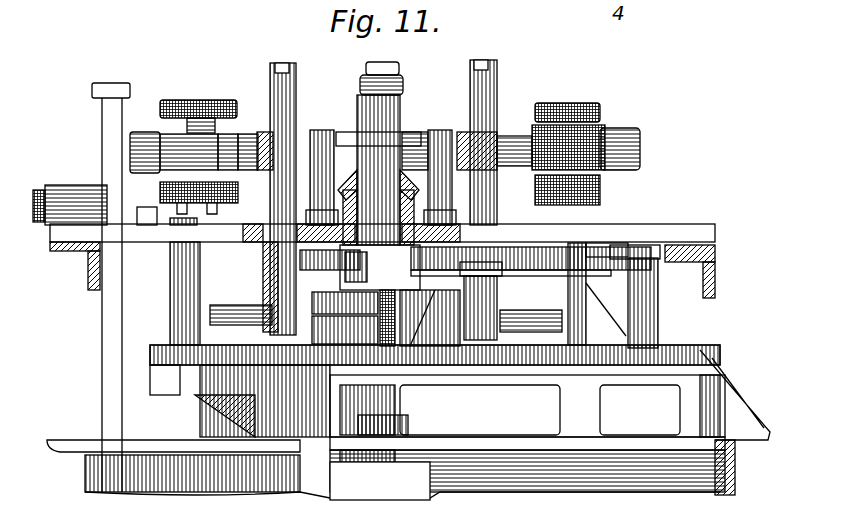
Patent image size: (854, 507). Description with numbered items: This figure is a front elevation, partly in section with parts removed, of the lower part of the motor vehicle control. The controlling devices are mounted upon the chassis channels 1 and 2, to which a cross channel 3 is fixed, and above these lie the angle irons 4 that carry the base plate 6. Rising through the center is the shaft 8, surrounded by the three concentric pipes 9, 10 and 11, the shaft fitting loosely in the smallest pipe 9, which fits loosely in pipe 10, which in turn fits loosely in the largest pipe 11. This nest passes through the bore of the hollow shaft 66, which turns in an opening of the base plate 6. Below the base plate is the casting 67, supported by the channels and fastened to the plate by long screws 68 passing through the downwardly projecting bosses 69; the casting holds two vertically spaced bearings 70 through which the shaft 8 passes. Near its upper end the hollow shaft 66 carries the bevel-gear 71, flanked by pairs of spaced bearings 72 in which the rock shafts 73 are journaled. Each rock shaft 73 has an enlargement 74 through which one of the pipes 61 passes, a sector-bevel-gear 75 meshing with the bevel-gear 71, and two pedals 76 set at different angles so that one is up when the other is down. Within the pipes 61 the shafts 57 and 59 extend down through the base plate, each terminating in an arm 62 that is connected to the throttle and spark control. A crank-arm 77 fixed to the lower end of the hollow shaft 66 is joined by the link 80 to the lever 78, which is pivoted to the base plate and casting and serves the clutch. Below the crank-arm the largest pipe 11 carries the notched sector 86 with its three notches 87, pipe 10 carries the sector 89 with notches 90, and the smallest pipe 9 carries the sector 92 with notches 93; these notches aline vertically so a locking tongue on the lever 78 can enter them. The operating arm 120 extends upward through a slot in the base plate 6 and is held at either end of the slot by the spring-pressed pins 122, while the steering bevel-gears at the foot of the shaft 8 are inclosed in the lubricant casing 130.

The channel 1 is at (735, 484).
The channel 2 is at (386, 469).
The cross channel 3 is at (625, 489).
The angle iron 4 is at (716, 280).
The base plate 6 is at (682, 236).
The shaft 8 is at (392, 66).
The smallest pipe 9 is at (366, 72).
The pipe 10 is at (388, 90).
The largest pipe 11 is at (378, 170).
The shaft 57 is at (492, 64).
The shaft 59 is at (264, 258).
The pipe 61 is at (272, 80).
The arm 62 is at (254, 306).
The hollow shaft 66 is at (378, 217).
The casting 67 is at (245, 392).
The screw 68 is at (182, 285).
The boss 69 is at (570, 336).
The bearing 70 is at (392, 432).
The bevel-gear 71 is at (378, 185).
The bearing 72 is at (150, 152).
The rock shaft 73 is at (250, 146).
The enlargement 74 is at (306, 142).
The sector-bevel-gear 75 is at (358, 142).
The pedal 76 is at (192, 108).
The crank-arm 77 is at (475, 263).
The lever 78 is at (528, 262).
The link 80 is at (380, 255).
The sector 86 is at (345, 299).
The notch 87 is at (420, 318).
The sector 89 is at (345, 327).
The notch 90 is at (455, 330).
The sector 92 is at (289, 345).
The notch 93 is at (501, 345).
The operating arm 120 is at (100, 340).
The spring-pressed pin 122 is at (110, 197).
The casing 130 is at (380, 481).